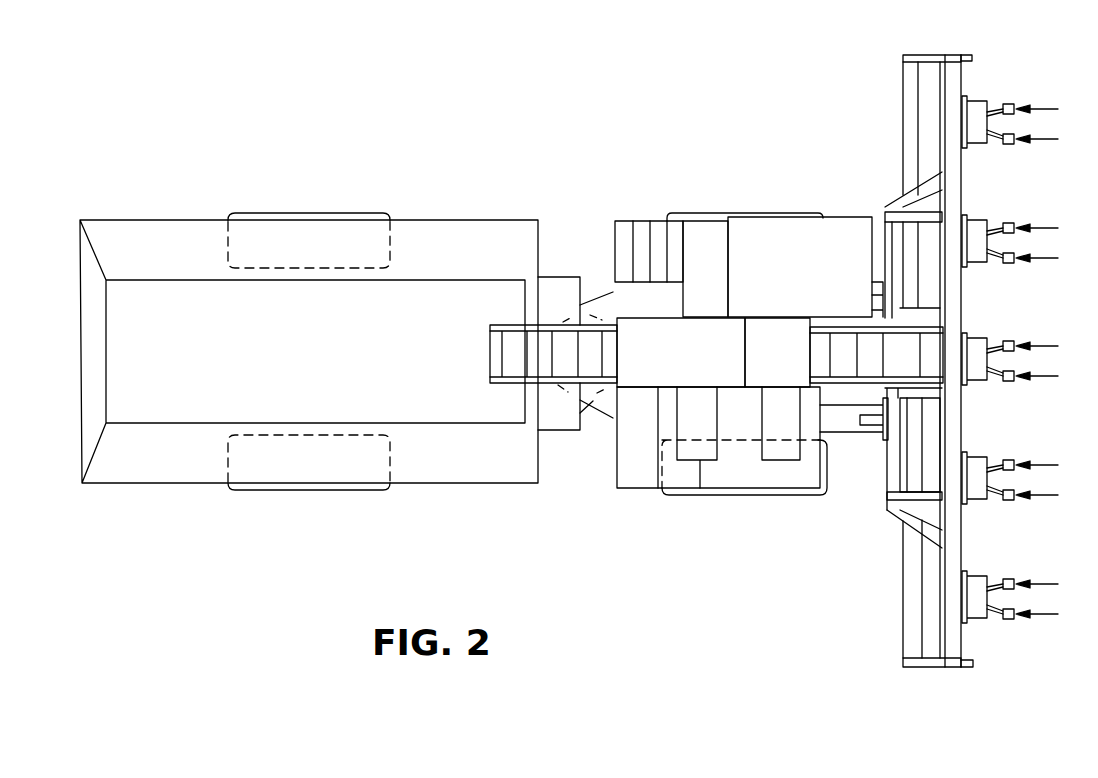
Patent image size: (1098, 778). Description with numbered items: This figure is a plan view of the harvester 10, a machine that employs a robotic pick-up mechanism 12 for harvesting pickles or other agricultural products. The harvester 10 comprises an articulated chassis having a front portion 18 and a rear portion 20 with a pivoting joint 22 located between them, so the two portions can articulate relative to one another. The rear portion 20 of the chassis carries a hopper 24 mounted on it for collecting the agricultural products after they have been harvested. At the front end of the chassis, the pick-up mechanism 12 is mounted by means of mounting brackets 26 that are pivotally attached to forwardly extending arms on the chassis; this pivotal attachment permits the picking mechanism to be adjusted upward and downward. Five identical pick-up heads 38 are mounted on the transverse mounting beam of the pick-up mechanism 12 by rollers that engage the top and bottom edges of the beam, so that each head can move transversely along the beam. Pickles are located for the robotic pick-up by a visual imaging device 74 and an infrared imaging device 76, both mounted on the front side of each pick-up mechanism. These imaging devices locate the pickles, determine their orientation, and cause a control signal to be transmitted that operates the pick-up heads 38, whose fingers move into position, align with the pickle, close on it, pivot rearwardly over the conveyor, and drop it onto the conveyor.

The harvester 10 is at (588, 212).
The robotic pick-up mechanism 12 is at (965, 361).
The front portion 18 is at (605, 413).
The rear portion 20 is at (557, 422).
The pivoting joint 22 is at (596, 368).
The hopper 24 is at (145, 235).
The mounting brackets 26 is at (889, 203).
The pick-up heads 38 is at (997, 335).
The visual imaging device 74 is at (1036, 347).
The infrared imaging device 76 is at (1036, 377).